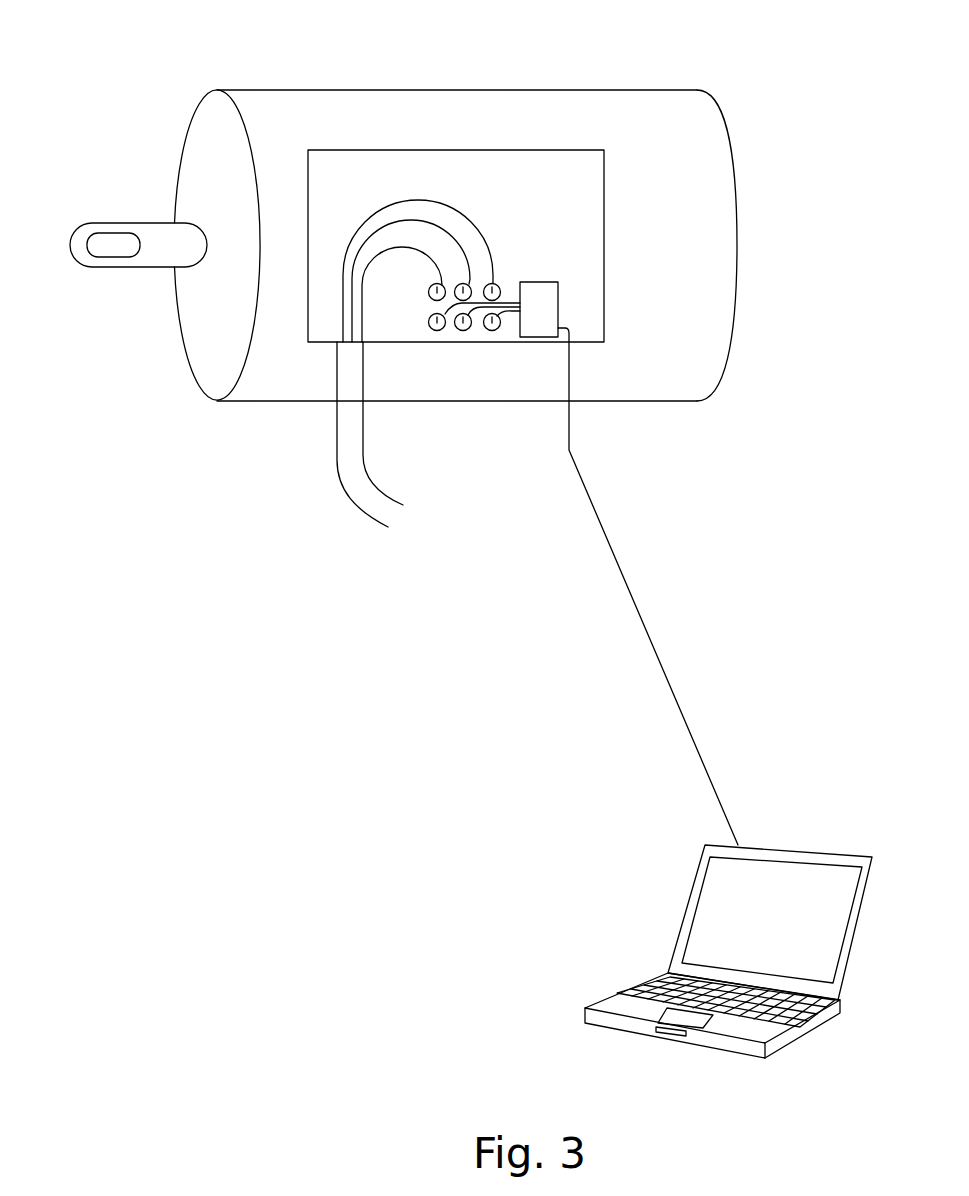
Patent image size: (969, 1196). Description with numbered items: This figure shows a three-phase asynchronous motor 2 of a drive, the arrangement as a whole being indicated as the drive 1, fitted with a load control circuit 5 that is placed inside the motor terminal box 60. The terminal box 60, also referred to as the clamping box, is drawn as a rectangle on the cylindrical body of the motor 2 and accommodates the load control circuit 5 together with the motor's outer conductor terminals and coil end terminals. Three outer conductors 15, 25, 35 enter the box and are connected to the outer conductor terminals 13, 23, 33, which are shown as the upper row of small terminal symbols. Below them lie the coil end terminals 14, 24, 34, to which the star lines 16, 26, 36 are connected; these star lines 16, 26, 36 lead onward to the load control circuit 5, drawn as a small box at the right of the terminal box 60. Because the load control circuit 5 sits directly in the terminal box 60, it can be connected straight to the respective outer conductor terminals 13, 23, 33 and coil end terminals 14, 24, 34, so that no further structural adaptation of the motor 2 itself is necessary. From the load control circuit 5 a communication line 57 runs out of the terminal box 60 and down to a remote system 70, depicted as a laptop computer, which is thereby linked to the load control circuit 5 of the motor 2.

The measuring arrangement 1 is at (296, 443).
The motor 2 is at (283, 107).
The load control circuit 5 is at (558, 310).
The outer conductor terminal 13 is at (442, 283).
The coil end terminal 14 is at (432, 316).
The outer conductor 15 is at (400, 217).
The star line 16 is at (443, 331).
The outer conductor terminal 23 is at (468, 284).
The coil end terminal 24 is at (458, 330).
The outer conductor 25 is at (398, 250).
The star line 26 is at (472, 331).
The outer conductor terminal 33 is at (494, 284).
The coil end terminal 34 is at (494, 331).
The outer conductor 35 is at (422, 202).
The star line 36 is at (500, 324).
The communication line 57 is at (605, 530).
The motor terminal box 60 is at (605, 195).
The remote system 70 is at (782, 845).